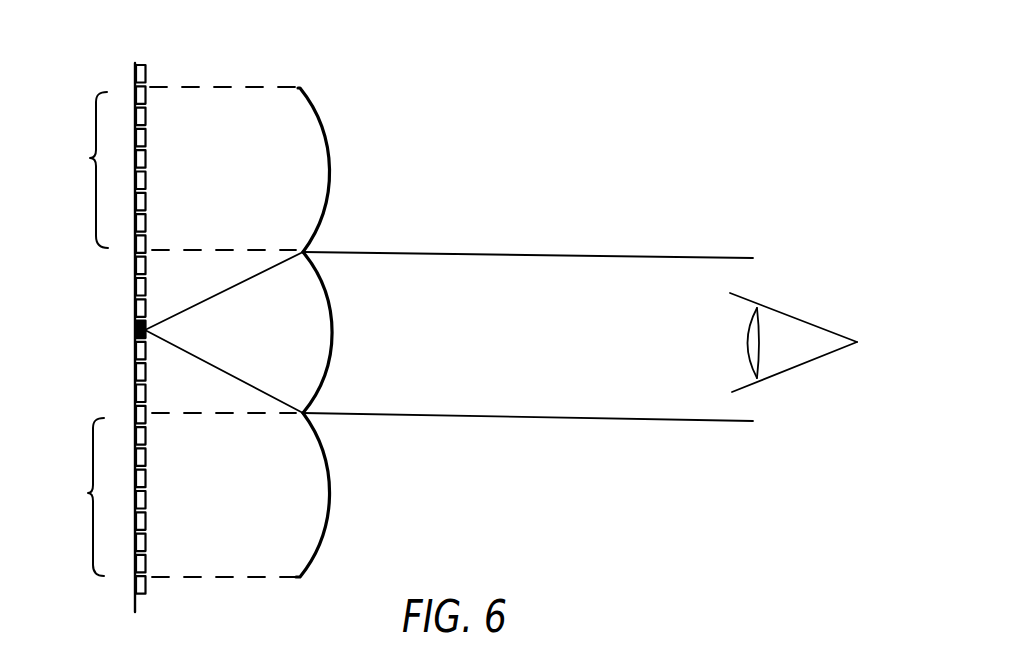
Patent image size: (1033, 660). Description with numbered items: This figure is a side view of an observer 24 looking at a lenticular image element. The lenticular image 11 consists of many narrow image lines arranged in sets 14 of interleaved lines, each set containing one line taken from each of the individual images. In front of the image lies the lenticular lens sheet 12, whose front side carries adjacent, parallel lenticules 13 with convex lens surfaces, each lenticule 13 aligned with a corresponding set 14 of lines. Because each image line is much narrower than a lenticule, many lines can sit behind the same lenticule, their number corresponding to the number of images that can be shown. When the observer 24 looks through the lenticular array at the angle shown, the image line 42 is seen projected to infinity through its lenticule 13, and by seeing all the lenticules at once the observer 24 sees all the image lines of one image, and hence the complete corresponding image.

The lenticular image 11 is at (148, 61).
The lenticular lens sheet 12 is at (215, 84).
The lenticule 13 is at (331, 182).
The set of interleaved lines 14 is at (83, 334).
The observer 24 is at (804, 333).
The image line 42 is at (134, 331).